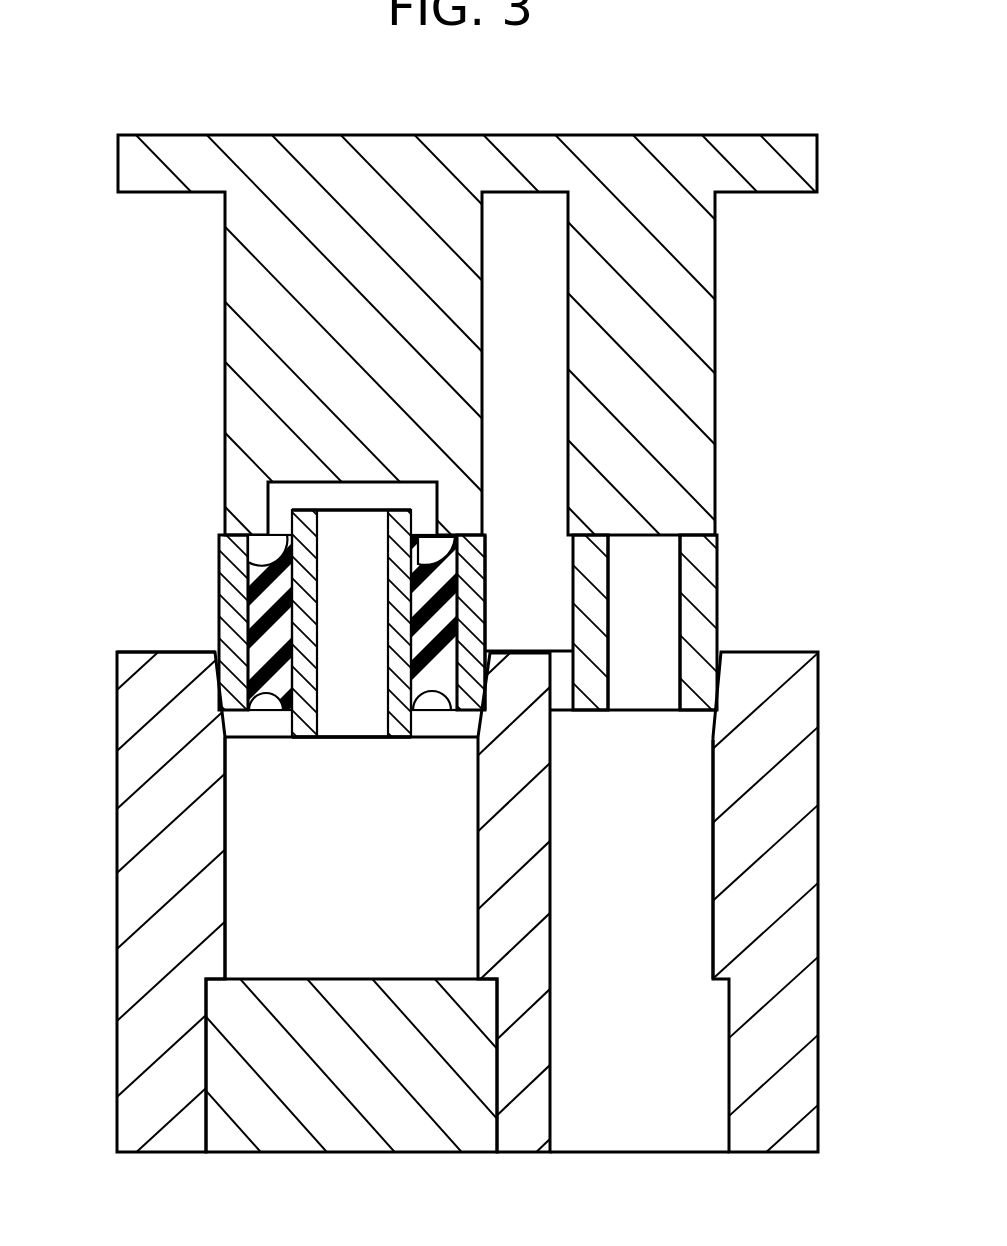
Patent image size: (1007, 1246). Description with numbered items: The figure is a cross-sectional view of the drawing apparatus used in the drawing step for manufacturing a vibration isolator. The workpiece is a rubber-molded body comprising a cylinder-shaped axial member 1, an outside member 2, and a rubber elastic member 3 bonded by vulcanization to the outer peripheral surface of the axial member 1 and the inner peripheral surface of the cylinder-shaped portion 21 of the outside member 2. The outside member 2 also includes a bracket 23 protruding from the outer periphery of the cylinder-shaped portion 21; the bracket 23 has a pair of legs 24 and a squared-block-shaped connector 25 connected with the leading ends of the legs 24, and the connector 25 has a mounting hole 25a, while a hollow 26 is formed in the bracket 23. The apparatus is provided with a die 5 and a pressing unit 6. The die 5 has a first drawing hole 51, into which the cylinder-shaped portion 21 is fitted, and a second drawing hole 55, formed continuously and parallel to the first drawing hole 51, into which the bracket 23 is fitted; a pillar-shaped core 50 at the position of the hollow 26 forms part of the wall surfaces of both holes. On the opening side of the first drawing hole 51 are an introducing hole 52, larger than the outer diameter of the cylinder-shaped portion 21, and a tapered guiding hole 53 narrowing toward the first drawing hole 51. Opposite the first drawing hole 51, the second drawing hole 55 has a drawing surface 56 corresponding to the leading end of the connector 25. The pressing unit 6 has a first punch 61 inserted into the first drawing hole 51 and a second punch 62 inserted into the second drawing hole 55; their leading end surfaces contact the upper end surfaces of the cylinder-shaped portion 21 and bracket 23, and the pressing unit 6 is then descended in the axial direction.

The axial member 1 is at (296, 498).
The outside member 2 is at (503, 623).
The rubber elastic member 3 is at (264, 538).
The die 5 is at (500, 623).
The pressing unit 6 is at (500, 623).
The cylinder-shaped portion 21 is at (240, 593).
The bracket 23 is at (503, 623).
The leg 24 is at (503, 550).
The connector 25 is at (705, 590).
The mounting hole 25a is at (690, 580).
The hollow 26 is at (572, 583).
The pillar-shaped core 50 is at (518, 837).
The first drawing hole 51 is at (233, 856).
The introducing hole 52 is at (226, 672).
The guiding hole 53 is at (222, 730).
The second drawing hole 55 is at (700, 894).
The drawing surface 56 is at (700, 791).
The first punch 61 is at (287, 372).
The second punch 62 is at (665, 347).